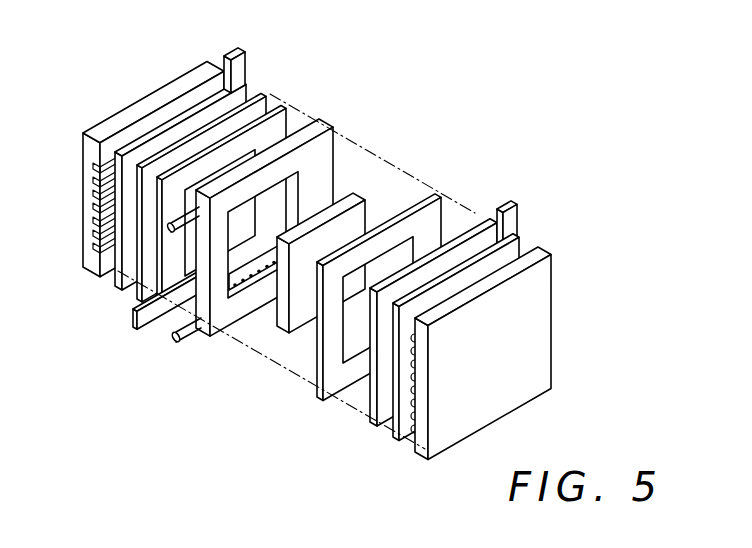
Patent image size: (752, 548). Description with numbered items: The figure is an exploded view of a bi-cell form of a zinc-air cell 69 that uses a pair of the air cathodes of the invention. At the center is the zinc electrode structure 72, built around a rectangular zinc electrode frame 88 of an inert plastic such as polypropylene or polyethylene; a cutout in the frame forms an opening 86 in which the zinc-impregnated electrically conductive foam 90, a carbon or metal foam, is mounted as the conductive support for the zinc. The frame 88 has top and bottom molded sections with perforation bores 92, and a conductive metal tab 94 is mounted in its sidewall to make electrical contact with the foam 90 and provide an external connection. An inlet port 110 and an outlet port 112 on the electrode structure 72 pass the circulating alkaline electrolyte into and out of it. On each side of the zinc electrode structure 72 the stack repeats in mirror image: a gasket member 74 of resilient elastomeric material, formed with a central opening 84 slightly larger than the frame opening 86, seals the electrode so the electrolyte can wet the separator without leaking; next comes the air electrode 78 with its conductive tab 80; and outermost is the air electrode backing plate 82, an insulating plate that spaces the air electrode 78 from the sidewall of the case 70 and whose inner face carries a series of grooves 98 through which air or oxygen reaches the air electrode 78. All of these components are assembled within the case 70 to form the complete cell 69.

The zinc-air cell 69 is at (580, 313).
The case 70 is at (263, 93).
The zinc electrode structure 72 is at (366, 108).
The gasket member 74 is at (290, 236).
The air electrode 78 is at (326, 223).
The conductive tab 80 is at (326, 215).
The air electrode backing plate 82 is at (313, 232).
The central opening 84 is at (318, 369).
The opening 86 is at (301, 191).
The zinc electrode frame 88 is at (312, 205).
The zinc-impregnated conductive foam 90 is at (351, 208).
The perforation bores 92 is at (256, 276).
The conductive metal tab 94 is at (133, 320).
The grooves 98 is at (306, 223).
The inlet port 110 is at (186, 337).
The outlet port 112 is at (170, 229).